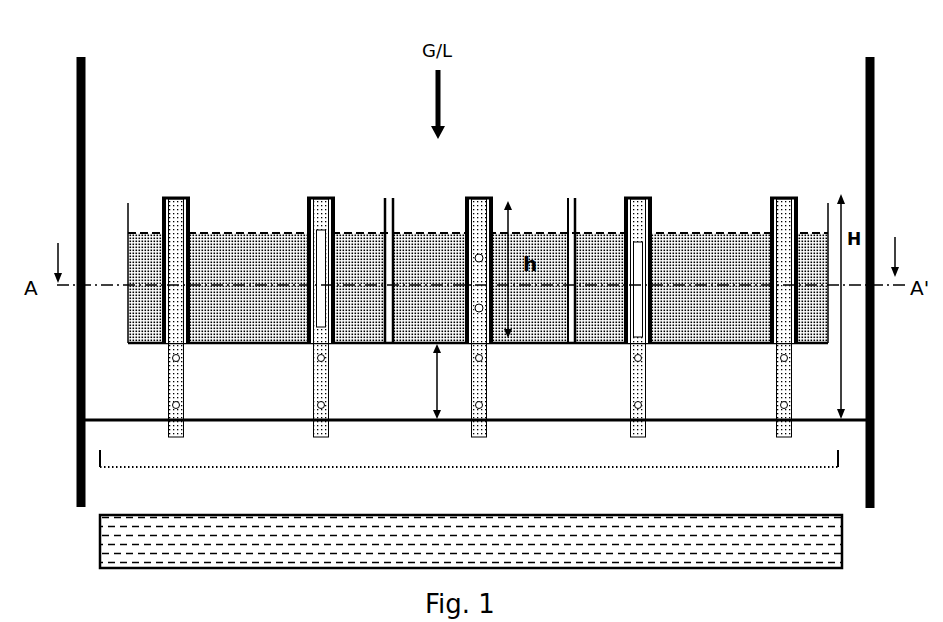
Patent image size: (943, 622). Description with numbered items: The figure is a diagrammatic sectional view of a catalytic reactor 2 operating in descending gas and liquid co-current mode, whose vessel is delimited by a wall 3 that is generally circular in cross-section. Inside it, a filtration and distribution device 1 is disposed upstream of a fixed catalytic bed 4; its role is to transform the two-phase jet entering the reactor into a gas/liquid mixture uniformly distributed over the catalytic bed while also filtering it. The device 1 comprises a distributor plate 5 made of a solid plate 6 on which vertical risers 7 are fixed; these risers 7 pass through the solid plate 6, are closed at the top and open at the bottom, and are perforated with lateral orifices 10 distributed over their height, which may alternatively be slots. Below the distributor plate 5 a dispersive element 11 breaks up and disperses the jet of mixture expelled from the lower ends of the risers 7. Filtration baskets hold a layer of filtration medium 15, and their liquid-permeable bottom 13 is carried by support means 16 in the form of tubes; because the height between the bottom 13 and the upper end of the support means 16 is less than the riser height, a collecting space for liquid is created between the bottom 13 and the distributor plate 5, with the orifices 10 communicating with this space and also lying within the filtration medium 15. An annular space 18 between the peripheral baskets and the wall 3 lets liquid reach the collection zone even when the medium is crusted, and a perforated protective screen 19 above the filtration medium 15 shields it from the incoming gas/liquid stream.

The filtration and distribution device 1 is at (806, 143).
The catalytic reactor 2 is at (59, 78).
The wall 3 is at (873, 150).
The fixed catalytic bed 4 is at (308, 555).
The distributor plate 5 is at (220, 404).
The solid plate 6 is at (562, 422).
The risers 7 is at (648, 380).
The lateral orifices 10 is at (640, 325).
The dispersive element 11 is at (768, 465).
The bottom of the baskets 13 is at (748, 345).
The filtration medium 15 is at (423, 247).
The support means 16 is at (653, 222).
The annular space 18 is at (112, 245).
The perforated protective screen 19 is at (257, 233).